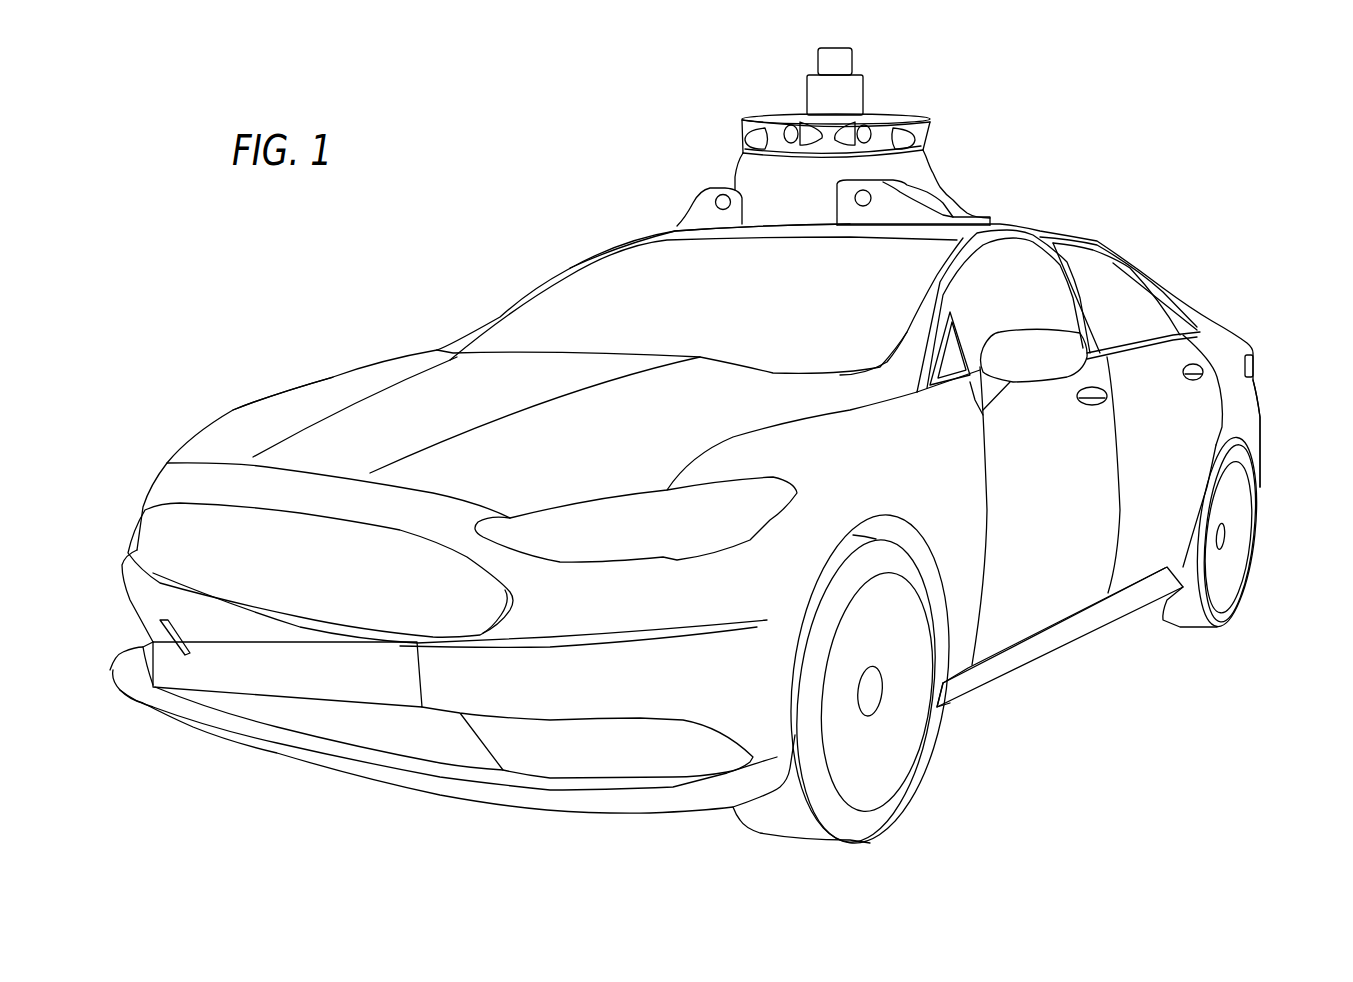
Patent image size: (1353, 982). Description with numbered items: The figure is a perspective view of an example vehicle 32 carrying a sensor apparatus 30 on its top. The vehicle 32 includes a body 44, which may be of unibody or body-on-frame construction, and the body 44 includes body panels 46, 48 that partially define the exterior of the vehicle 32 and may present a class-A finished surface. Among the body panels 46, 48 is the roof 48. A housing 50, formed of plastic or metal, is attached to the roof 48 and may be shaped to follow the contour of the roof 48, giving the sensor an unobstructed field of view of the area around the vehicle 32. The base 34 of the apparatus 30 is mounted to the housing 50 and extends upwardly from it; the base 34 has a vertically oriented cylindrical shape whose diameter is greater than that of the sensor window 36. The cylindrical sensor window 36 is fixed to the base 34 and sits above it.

The apparatus 30 is at (922, 86).
The vehicle 32 is at (645, 80).
The base 34 is at (807, 95).
The cylindrical sensor window 36 is at (818, 60).
The body 44 is at (1043, 660).
The body panel 46 is at (337, 377).
The roof 48 is at (672, 230).
The housing 50 is at (931, 172).